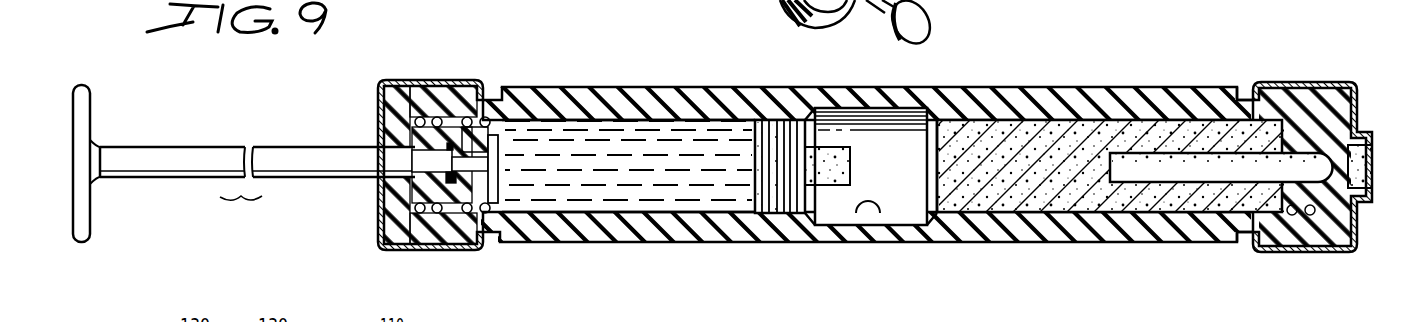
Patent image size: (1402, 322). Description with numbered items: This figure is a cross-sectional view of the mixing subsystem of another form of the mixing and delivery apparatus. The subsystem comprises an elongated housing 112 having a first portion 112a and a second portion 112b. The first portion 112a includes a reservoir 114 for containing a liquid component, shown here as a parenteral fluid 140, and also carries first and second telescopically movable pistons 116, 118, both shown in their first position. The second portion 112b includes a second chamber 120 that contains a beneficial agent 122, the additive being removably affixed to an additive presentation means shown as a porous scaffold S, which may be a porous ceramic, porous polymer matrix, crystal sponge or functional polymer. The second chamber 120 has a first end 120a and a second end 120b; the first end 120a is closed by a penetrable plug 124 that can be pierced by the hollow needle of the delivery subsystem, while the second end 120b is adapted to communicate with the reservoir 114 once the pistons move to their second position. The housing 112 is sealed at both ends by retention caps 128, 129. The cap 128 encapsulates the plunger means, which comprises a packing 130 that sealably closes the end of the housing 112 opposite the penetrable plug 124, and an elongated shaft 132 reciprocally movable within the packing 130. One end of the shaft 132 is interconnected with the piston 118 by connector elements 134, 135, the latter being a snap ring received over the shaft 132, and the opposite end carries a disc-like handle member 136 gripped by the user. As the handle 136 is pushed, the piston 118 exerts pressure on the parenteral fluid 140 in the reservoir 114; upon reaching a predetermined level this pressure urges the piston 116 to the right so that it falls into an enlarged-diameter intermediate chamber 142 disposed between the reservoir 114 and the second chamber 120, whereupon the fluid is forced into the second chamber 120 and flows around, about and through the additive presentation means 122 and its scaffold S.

The elongated housing 112 is at (1044, 85).
The first portion of the housing 112a is at (522, 103).
The second portion of the housing 112b is at (1202, 90).
The reservoir 114 is at (645, 131).
The first piston 116 is at (755, 190).
The second piston 118 is at (476, 127).
The second chamber 120 is at (1117, 118).
The first end of the second chamber 120a is at (1267, 120).
The second end of the second chamber 120b is at (948, 203).
The beneficial agent 122 is at (1082, 182).
The penetrable plug 124 is at (1330, 193).
The retention cap 128 is at (430, 80).
The retention cap 129 is at (1277, 252).
The packing 130 is at (383, 208).
The elongated shaft 132 is at (158, 179).
The connector element 134 is at (500, 187).
The snap ring 135 is at (452, 184).
The disc-like handle member 136 is at (93, 100).
The parenteral fluid 140 is at (620, 185).
The intermediate chamber 142 is at (857, 216).
The porous scaffold S is at (1010, 192).